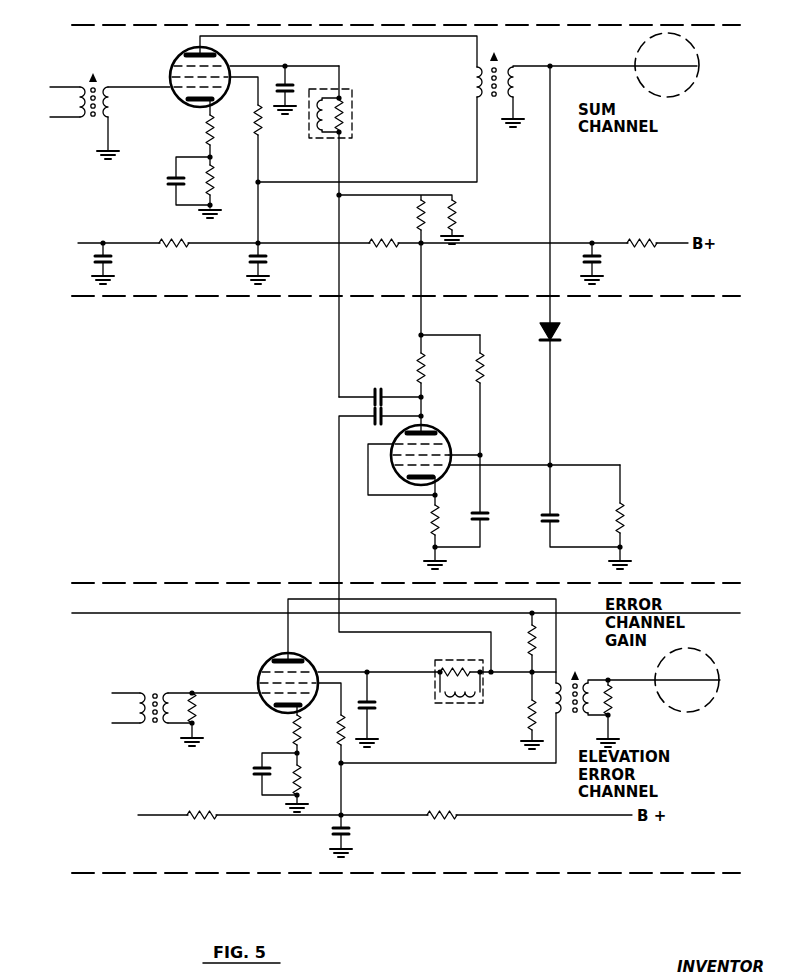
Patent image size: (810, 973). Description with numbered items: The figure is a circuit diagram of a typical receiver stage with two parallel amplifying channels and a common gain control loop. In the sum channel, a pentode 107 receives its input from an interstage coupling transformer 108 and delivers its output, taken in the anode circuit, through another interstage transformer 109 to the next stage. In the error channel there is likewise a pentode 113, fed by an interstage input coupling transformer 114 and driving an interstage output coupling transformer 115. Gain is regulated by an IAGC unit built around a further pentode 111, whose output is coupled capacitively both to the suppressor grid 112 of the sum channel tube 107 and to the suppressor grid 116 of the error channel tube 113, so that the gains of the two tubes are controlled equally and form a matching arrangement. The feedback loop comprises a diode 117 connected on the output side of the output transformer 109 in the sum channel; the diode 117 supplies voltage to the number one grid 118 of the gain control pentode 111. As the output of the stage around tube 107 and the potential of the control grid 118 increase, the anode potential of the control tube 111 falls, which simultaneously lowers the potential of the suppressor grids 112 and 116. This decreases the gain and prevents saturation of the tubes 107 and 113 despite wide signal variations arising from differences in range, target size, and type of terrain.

The pentode 107 is at (170, 62).
The interstage coupling transformer 108 is at (93, 126).
The interstage transformer 109 is at (498, 62).
The pentode 111 is at (431, 426).
The suppressor grid 112 is at (195, 66).
The pentode 113 is at (262, 661).
The interstage input coupling transformer 114 is at (155, 690).
The interstage output coupling transformer 115 is at (577, 681).
The suppressor grid 116 is at (311, 667).
The diode 117 is at (561, 331).
The number 1 grid 118 is at (433, 470).